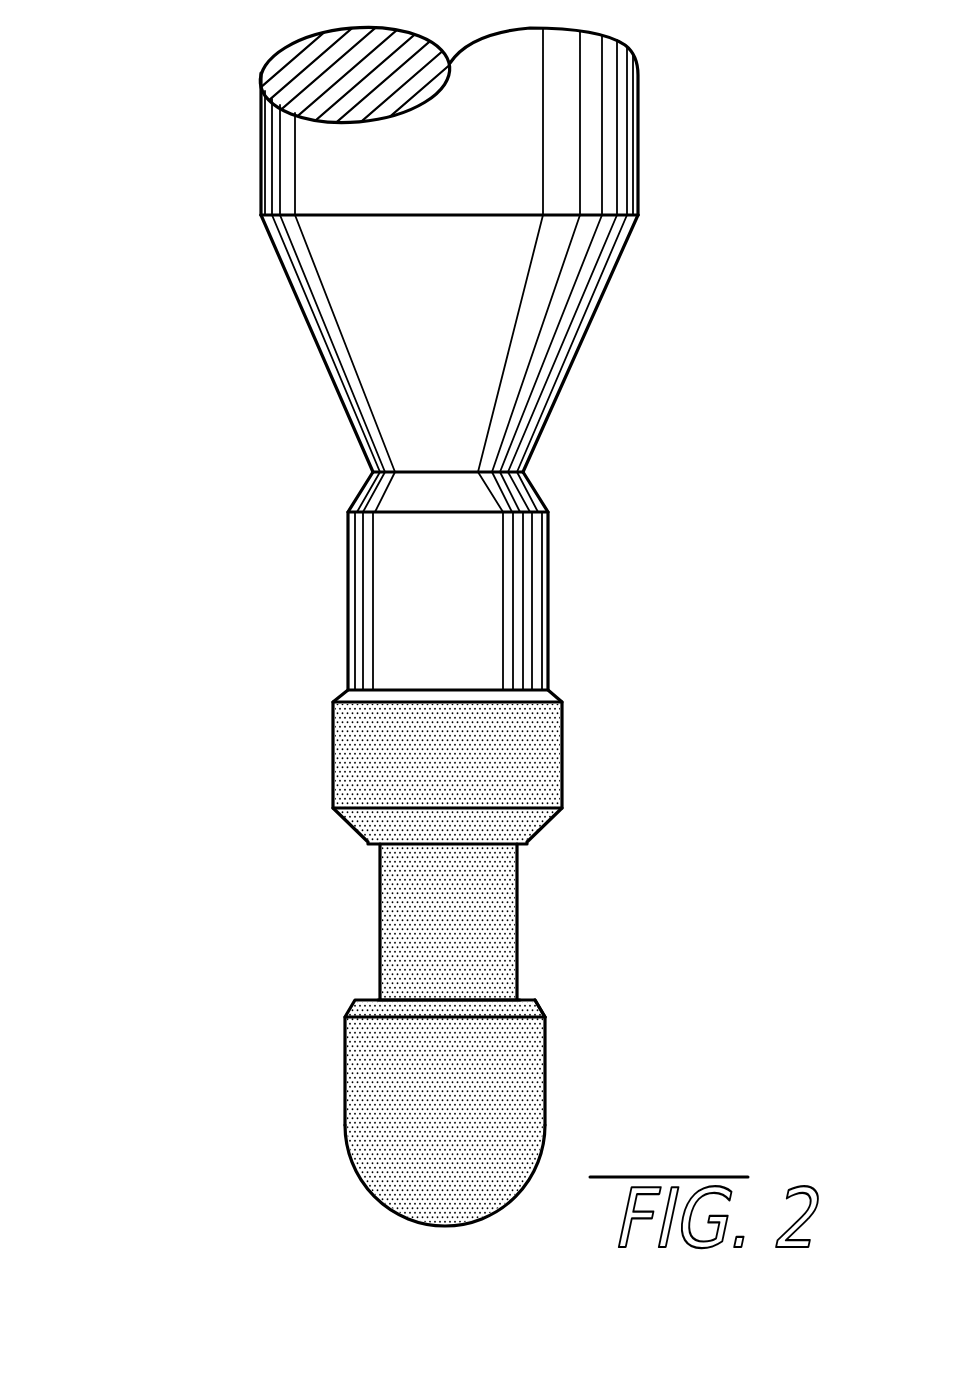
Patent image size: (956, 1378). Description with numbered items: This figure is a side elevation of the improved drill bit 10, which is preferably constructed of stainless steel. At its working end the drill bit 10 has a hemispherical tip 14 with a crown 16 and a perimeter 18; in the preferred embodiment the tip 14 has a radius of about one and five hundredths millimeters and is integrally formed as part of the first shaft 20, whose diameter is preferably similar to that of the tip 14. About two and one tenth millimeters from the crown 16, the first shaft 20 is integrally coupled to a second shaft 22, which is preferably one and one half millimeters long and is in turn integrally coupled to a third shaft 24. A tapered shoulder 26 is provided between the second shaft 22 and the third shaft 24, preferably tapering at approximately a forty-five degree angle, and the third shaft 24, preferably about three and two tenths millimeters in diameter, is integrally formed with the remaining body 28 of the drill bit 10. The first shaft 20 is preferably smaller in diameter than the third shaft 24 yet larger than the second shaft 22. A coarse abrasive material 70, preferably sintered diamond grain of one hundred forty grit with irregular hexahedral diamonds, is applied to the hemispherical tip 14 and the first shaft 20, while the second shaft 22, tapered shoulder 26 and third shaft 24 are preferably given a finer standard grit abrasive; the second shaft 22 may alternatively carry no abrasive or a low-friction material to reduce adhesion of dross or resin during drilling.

The drill bit 10 is at (277, 325).
The remaining body 28 is at (348, 593).
The third shaft 24 is at (335, 750).
The tapered shoulder 26 is at (368, 840).
The second shaft 22 is at (380, 937).
The hemispherical tip 14 is at (418, 1155).
The first shaft 20 is at (347, 1113).
The perimeter 18 is at (530, 1107).
The crown 16 is at (430, 1200).
The course abrasive material 70 is at (517, 1056).